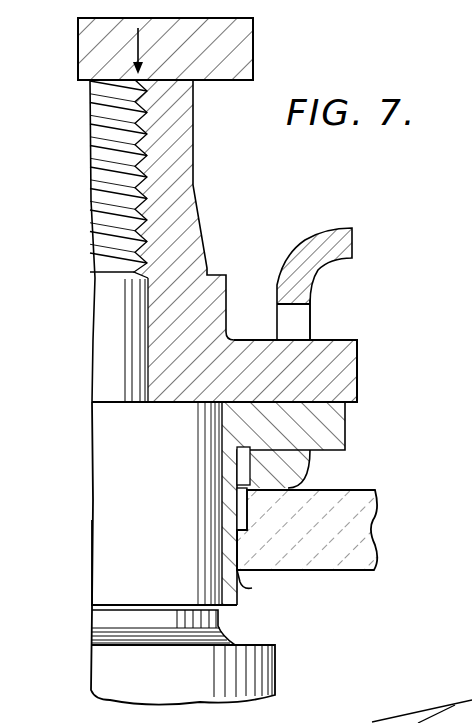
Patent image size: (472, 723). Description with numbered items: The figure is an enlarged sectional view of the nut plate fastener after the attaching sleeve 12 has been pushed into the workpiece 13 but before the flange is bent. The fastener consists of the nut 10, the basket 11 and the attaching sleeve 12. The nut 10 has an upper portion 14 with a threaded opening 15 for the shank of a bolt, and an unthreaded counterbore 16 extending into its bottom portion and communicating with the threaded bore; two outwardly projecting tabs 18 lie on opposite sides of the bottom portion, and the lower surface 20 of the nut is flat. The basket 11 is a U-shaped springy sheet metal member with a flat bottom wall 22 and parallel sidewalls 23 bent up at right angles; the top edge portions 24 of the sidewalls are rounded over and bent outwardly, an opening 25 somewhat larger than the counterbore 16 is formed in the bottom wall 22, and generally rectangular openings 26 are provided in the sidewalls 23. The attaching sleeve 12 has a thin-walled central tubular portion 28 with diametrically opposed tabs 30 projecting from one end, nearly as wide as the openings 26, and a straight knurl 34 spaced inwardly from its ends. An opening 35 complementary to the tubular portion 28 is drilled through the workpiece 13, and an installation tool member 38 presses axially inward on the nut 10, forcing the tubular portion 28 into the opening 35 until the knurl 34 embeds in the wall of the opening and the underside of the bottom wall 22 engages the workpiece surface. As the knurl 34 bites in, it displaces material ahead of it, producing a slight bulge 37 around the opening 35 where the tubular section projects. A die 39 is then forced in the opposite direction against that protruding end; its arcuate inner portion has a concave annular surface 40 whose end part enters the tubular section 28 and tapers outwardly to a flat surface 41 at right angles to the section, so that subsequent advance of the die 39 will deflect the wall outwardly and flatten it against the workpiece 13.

The nut 10 is at (84, 110).
The basket 11 is at (322, 299).
The attaching sleeve 12 is at (86, 492).
The workpiece 13 is at (378, 522).
The upper portion 14 is at (196, 118).
The threaded opening 15 is at (402, 720).
The counterbore 16 is at (104, 236).
The tabs 18 is at (358, 370).
The lower surface 20 is at (165, 403).
The bottom wall 22 is at (238, 450).
The sidewalls 23 is at (277, 302).
The top edge portions 24 is at (320, 238).
The opening 25 is at (248, 472).
The rectangular openings 26 is at (304, 325).
The tubular portion 28 is at (100, 547).
The tabs 30 is at (346, 429).
The knurl 34 is at (246, 512).
The opening 35 is at (236, 540).
The bulge 37 is at (246, 586).
The member 38 is at (257, 33).
The die 39 is at (100, 688).
The annular surface 40 is at (222, 640).
The flat surface 41 is at (262, 646).